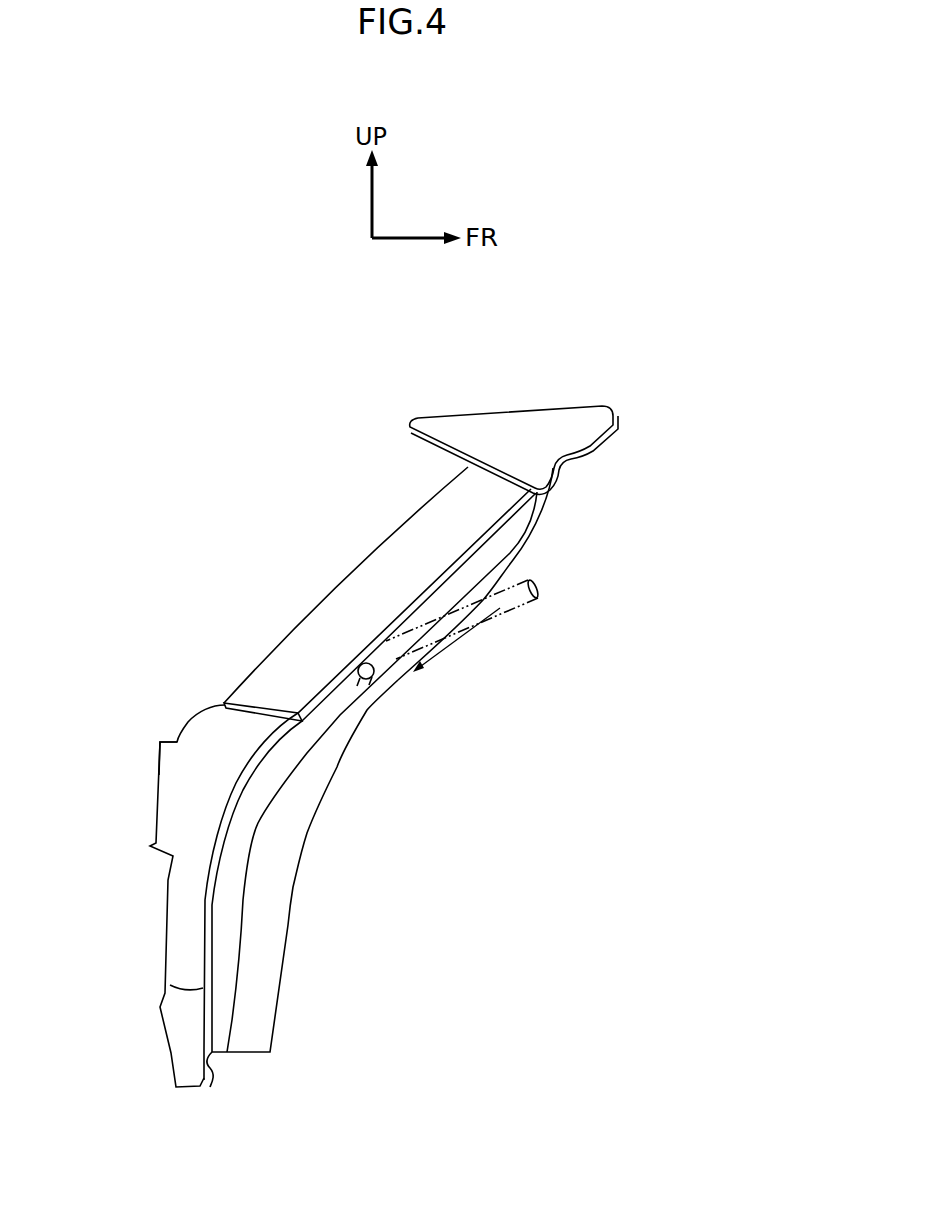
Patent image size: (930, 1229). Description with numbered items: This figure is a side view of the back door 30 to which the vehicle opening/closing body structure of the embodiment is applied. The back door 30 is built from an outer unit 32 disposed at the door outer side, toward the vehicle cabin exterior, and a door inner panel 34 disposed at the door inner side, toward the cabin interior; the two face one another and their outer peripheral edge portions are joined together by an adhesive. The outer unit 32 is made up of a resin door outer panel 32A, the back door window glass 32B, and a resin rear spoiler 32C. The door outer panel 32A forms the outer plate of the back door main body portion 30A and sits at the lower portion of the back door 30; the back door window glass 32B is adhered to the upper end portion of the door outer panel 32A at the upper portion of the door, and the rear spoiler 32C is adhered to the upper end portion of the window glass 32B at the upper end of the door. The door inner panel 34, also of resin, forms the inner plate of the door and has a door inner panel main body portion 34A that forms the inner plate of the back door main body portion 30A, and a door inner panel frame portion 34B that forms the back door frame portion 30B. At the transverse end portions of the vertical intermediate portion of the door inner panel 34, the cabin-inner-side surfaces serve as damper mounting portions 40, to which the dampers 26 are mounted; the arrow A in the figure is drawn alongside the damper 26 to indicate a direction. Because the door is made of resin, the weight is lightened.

The back door 30 is at (152, 541).
The back door main body portion 30A is at (148, 763).
The back door frame portion 30B is at (500, 533).
The outer unit 32 is at (182, 696).
The door outer panel 32A is at (172, 802).
The back door window glass 32B is at (382, 560).
The rear spoiler 32C is at (525, 424).
The door inner panel 34 is at (365, 771).
The door inner panel main body portion 34A is at (278, 898).
The door inner panel frame portion 34B is at (472, 571).
The damper mounting portion 40 is at (363, 682).
The damper 26 is at (500, 615).
The insertion direction A is at (440, 653).